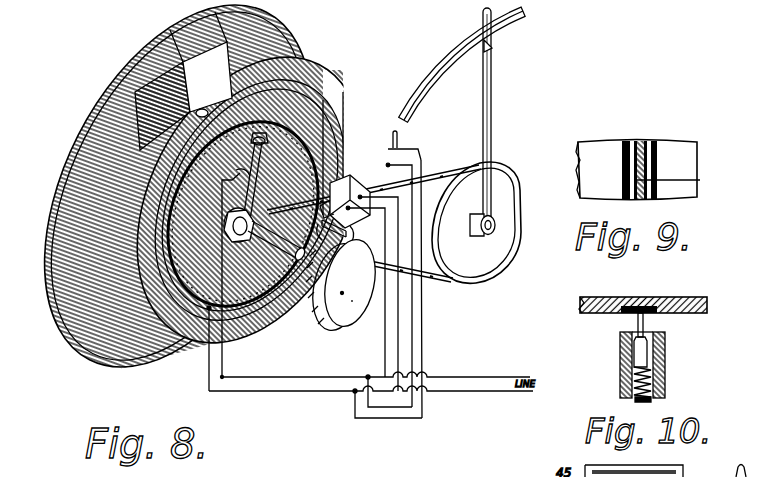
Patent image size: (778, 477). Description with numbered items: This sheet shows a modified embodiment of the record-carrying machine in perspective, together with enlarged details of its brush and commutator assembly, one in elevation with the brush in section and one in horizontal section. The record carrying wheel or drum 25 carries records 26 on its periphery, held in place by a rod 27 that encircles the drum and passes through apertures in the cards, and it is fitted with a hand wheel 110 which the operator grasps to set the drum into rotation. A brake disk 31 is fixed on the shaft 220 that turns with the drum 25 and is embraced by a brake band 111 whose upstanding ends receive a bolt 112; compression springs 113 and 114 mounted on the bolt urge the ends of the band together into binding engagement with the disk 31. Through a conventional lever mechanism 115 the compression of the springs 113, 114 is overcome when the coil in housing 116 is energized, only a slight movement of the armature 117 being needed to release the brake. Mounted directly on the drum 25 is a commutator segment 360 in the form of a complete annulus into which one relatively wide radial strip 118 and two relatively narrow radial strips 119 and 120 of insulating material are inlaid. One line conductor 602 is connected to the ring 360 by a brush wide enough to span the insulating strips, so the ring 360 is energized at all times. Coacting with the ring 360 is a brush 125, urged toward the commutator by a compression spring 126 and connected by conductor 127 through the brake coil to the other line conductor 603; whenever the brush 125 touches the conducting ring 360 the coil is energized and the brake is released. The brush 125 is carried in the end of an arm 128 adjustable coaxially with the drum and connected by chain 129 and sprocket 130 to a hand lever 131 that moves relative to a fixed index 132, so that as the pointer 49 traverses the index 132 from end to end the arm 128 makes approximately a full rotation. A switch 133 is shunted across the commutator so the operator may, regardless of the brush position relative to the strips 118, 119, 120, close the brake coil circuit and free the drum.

In FIG. 8, the hand wheel 110 is at (98, 128).
In FIG. 8, the records 26 is at (298, 72).
In FIG. 8, the drum 25 is at (318, 118).
In FIG. 8, the rod 27 is at (204, 110).
In FIG. 8, the arm 128 is at (257, 198).
In FIG. 8, the brush 125 is at (250, 158).
In FIG. 9, the brush 125 is at (682, 187).
In FIG. 10, the brush 125 is at (642, 322).
In FIG. 8, the chain 129 is at (440, 172).
In FIG. 8, the armature 117 is at (350, 180).
In FIG. 8, the housing 116 is at (362, 192).
In FIG. 8, the compression spring 114 is at (355, 233).
In FIG. 8, the lever mechanism 115 is at (343, 285).
In FIG. 8, the brake disk 31 is at (342, 296).
In FIG. 8, the shaft 220 is at (352, 302).
In FIG. 8, the brake band 111 is at (372, 305).
In FIG. 8, the bolt 112 is at (284, 306).
In FIG. 8, the compression spring 113 is at (313, 325).
In FIG. 8, the sprocket 130 is at (503, 205).
In FIG. 8, the hand lever 131 is at (487, 128).
In FIG. 8, the index 132 is at (442, 77).
In FIG. 8, the pointer 49 is at (483, 44).
In FIG. 8, the switch 133 is at (413, 148).
In FIG. 8, the conductor 127 is at (222, 198).
In FIG. 10, the conductor 127 is at (653, 398).
In FIG. 8, the line conductor 603 is at (481, 377).
In FIG. 8, the line conductor 602 is at (479, 391).
In FIG. 8, the commutator segment 360 is at (160, 368).
In FIG. 9, the commutator segment 360 is at (688, 163).
In FIG. 10, the commutator segment 360 is at (590, 297).
In FIG. 9, the narrow radial strip 119 is at (627, 141).
In FIG. 10, the narrow radial strip 119 is at (628, 308).
In FIG. 9, the wide radial strip 118 is at (640, 141).
In FIG. 10, the wide radial strip 118 is at (640, 297).
In FIG. 9, the narrow radial strip 120 is at (654, 141).
In FIG. 10, the narrow radial strip 120 is at (651, 308).
In FIG. 10, the compression spring 126 is at (656, 376).